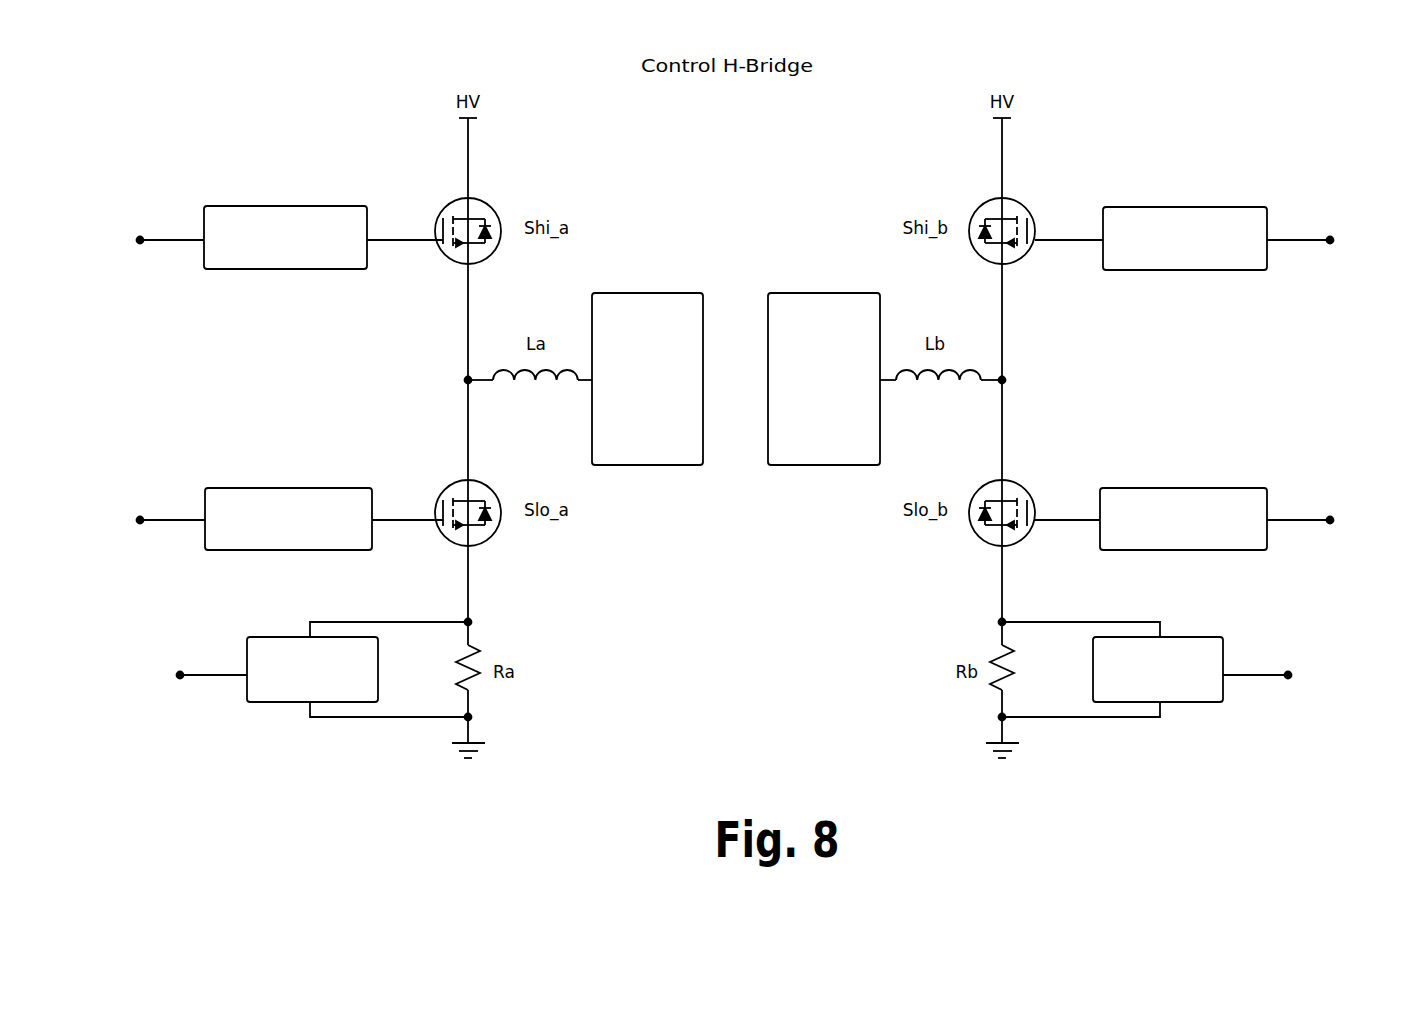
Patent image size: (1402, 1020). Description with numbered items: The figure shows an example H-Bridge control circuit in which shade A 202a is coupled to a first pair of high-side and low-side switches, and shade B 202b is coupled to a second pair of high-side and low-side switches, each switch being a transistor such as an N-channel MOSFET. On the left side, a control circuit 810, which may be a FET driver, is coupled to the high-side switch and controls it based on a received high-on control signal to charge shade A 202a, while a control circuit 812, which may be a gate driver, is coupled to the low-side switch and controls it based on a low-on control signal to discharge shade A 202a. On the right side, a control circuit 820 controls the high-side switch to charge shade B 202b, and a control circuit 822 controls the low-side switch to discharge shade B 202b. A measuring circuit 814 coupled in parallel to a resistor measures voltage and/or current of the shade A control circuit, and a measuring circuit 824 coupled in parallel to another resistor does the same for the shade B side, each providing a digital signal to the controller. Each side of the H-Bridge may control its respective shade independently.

The control circuit 810 is at (272, 206).
The control circuit 812 is at (272, 488).
The measuring circuit 814 is at (283, 637).
The control circuit 820 is at (1203, 207).
The control circuit 822 is at (1203, 488).
The measuring circuit 824 is at (1190, 637).
The shade A 202a is at (623, 405).
The shade B 202b is at (800, 405).